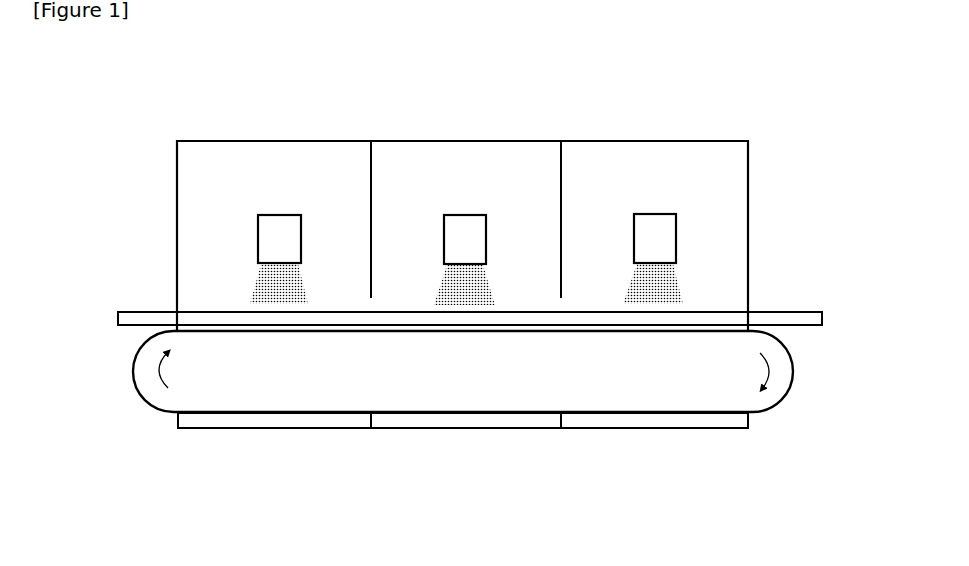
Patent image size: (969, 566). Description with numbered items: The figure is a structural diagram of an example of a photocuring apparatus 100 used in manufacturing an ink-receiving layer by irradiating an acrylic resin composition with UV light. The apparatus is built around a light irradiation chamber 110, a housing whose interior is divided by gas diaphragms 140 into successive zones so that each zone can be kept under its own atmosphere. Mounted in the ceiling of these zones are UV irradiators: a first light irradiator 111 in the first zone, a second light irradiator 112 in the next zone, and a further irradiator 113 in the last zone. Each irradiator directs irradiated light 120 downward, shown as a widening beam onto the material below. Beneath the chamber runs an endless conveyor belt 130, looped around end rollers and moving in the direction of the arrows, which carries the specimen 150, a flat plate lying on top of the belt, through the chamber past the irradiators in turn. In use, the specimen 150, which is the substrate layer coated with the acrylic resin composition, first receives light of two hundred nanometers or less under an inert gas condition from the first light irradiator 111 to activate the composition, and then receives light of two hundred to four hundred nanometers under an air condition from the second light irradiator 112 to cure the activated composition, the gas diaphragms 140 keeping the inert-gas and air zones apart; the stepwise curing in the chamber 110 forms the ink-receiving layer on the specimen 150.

The drying/curing apparatus 100 is at (429, 244).
The light irradiation chamber 110 is at (577, 175).
The first light irradiator 111 is at (277, 236).
The second light irradiator 112 is at (458, 232).
The third light source 113 is at (651, 235).
The irradiated light 120 is at (715, 280).
The conveyor belt 130 is at (603, 400).
The gas diaphragm 140 is at (372, 173).
The specimen 150 is at (803, 318).